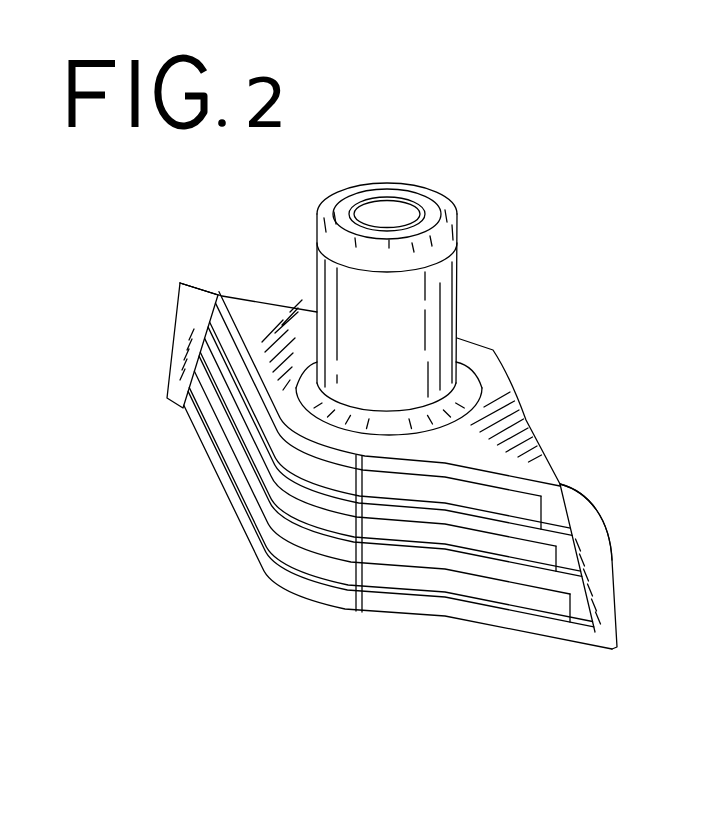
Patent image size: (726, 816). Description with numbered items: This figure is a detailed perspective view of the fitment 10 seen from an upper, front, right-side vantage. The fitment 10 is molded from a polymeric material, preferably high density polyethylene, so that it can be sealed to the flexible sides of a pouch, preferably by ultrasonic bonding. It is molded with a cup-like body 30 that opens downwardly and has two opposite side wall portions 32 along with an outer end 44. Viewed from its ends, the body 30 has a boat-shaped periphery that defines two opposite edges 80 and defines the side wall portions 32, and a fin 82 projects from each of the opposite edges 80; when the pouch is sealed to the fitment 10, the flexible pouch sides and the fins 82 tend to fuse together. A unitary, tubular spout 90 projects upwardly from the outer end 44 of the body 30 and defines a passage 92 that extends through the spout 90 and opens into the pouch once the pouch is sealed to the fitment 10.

The fitment 10 is at (595, 331).
The cup-like body 30 is at (510, 432).
The side wall portions 32 is at (540, 447).
The outer end 44 is at (278, 318).
The opposite edges 80 is at (207, 337).
The fin 82 is at (192, 293).
The tubular spout 90 is at (442, 286).
The passage 92 is at (400, 210).